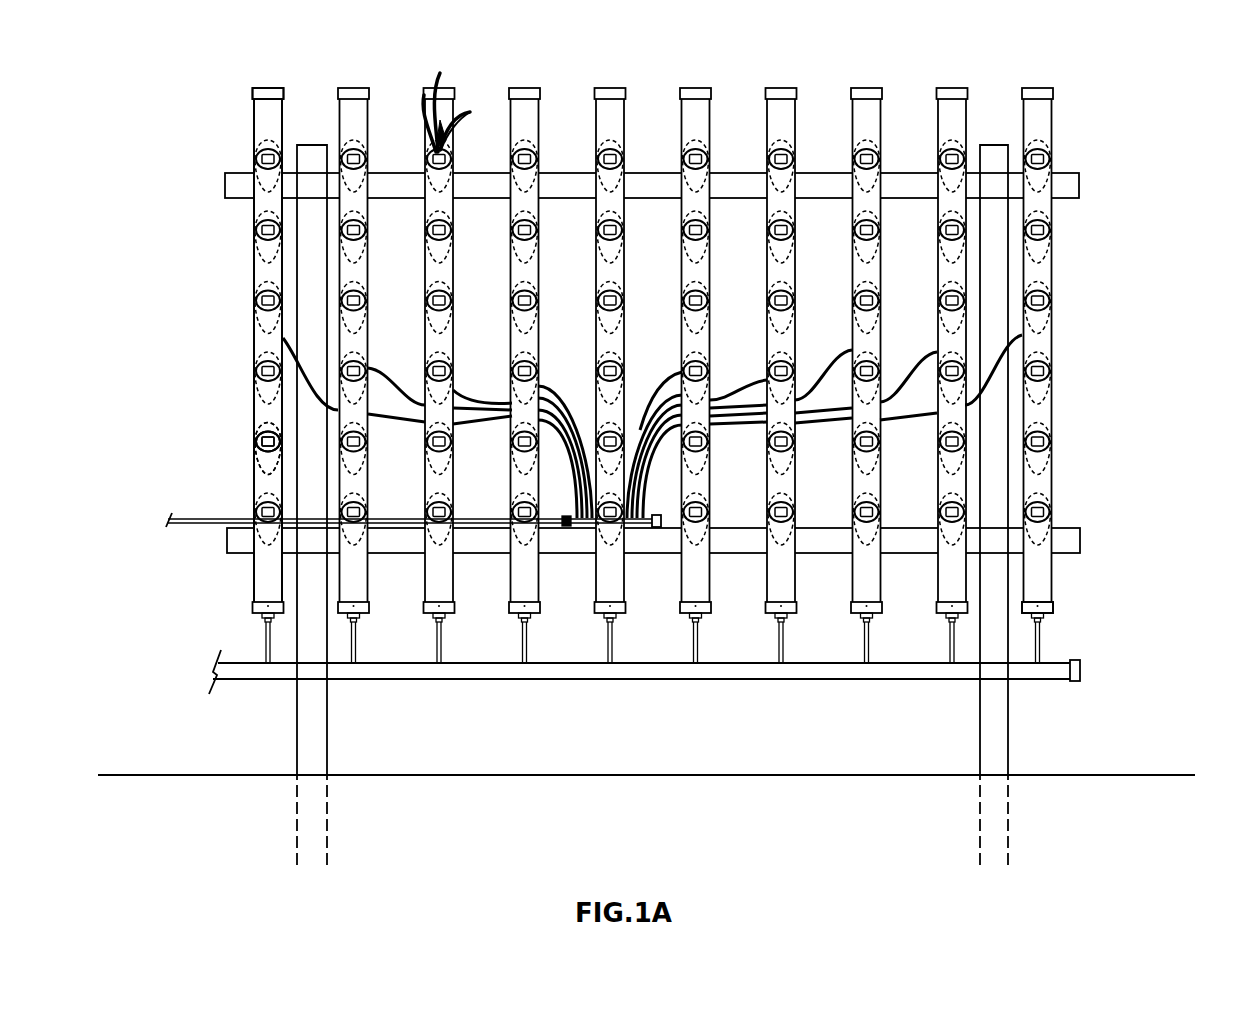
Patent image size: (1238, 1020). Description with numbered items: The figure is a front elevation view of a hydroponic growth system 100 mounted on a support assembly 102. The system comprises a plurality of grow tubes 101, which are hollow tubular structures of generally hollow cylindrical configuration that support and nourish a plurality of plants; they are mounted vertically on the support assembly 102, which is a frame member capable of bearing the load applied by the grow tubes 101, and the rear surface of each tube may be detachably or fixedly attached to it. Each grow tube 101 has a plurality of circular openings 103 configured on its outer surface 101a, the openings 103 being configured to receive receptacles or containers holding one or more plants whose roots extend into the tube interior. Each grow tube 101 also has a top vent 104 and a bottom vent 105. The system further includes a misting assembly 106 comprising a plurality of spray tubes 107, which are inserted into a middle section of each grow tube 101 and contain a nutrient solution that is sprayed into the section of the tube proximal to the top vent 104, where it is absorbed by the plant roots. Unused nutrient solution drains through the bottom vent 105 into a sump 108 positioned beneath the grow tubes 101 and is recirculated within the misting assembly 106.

The hydroponic growth system 100 is at (1114, 124).
The grow tube 101 is at (639, 344).
The outer surface 101a is at (268, 125).
The support assembly 102 is at (1063, 186).
The opening 103 is at (268, 432).
The top vent 104 is at (270, 88).
The bottom vent 105 is at (1053, 607).
The misting assembly 106 is at (232, 486).
The spray tube 107 is at (283, 340).
The sump 108 is at (1080, 668).